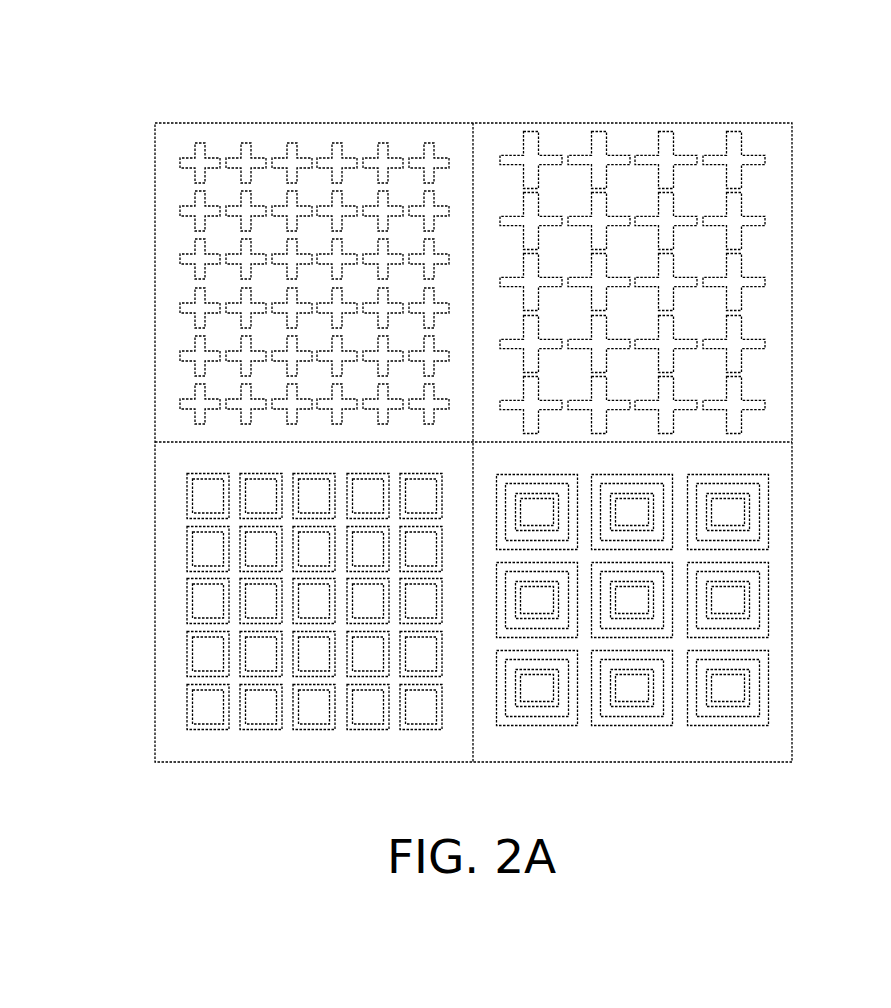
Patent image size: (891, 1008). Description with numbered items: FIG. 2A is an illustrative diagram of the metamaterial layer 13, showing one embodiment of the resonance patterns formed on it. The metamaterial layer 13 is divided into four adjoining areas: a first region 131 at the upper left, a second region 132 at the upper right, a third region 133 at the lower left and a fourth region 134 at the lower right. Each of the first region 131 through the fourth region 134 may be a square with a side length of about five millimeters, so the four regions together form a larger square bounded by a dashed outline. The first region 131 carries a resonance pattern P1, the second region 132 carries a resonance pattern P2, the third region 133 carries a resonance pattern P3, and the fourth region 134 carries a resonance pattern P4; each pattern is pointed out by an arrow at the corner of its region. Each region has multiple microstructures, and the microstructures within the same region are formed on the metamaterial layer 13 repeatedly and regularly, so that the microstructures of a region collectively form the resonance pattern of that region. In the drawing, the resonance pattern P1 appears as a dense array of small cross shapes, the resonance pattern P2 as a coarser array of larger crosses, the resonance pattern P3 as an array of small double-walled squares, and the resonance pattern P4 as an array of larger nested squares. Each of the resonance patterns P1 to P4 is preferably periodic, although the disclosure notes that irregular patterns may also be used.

The metamaterial layer 13 is at (55, 69).
The first region 131 is at (155, 232).
The second region 132 is at (793, 233).
The third region 133 is at (155, 650).
The fourth region 134 is at (793, 650).
The resonance pattern P1 is at (275, 287).
The resonance pattern P2 is at (673, 283).
The resonance pattern P3 is at (272, 595).
The resonance pattern P4 is at (672, 593).